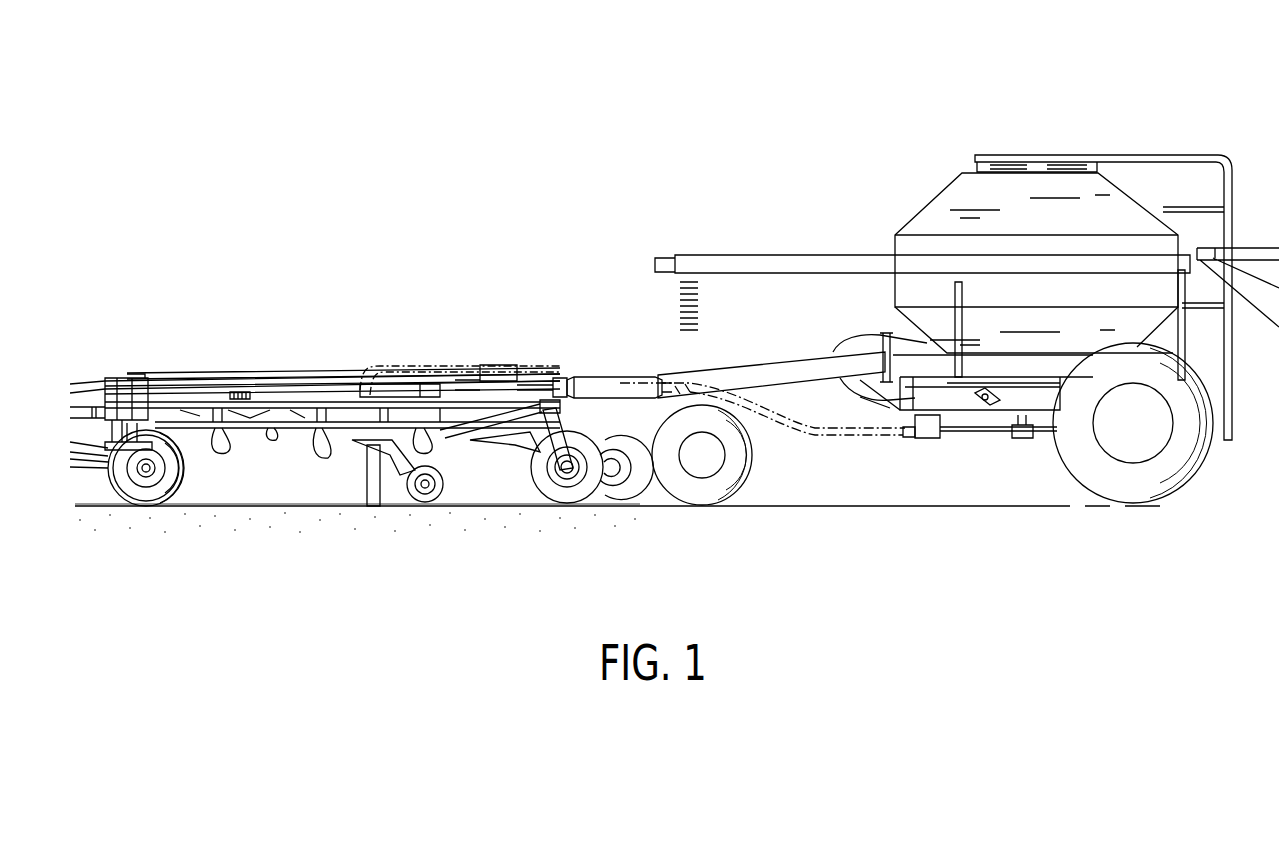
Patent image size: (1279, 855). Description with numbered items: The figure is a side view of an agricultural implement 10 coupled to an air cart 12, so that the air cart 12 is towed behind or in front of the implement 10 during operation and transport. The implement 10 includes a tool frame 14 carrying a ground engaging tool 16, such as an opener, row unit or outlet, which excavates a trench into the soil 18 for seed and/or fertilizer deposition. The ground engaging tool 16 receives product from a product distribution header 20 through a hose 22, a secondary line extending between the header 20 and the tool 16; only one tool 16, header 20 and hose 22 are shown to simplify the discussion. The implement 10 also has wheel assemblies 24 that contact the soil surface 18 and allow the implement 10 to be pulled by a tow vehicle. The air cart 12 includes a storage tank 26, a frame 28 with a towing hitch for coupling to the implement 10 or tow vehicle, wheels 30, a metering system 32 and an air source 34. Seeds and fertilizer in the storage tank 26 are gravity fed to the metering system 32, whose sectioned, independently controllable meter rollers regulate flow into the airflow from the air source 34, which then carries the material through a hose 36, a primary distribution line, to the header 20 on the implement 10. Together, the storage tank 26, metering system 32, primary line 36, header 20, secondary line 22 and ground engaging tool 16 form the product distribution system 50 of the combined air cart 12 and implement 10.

The implement 10 is at (361, 437).
The air cart 12 is at (949, 307).
The tool frame 14 is at (362, 395).
The ground engaging tool 16 is at (365, 506).
The soil 18 is at (475, 490).
The product distribution header 20 is at (497, 368).
The hose 22 is at (425, 367).
The wheel assembly 24 is at (142, 508).
The storage tank 26 is at (960, 197).
The frame 28 is at (770, 362).
The wheels 30 is at (770, 455).
The metering system 32 is at (990, 405).
The air source 34 is at (838, 343).
The hose 36 is at (830, 445).
The product distribution system 50 is at (603, 340).